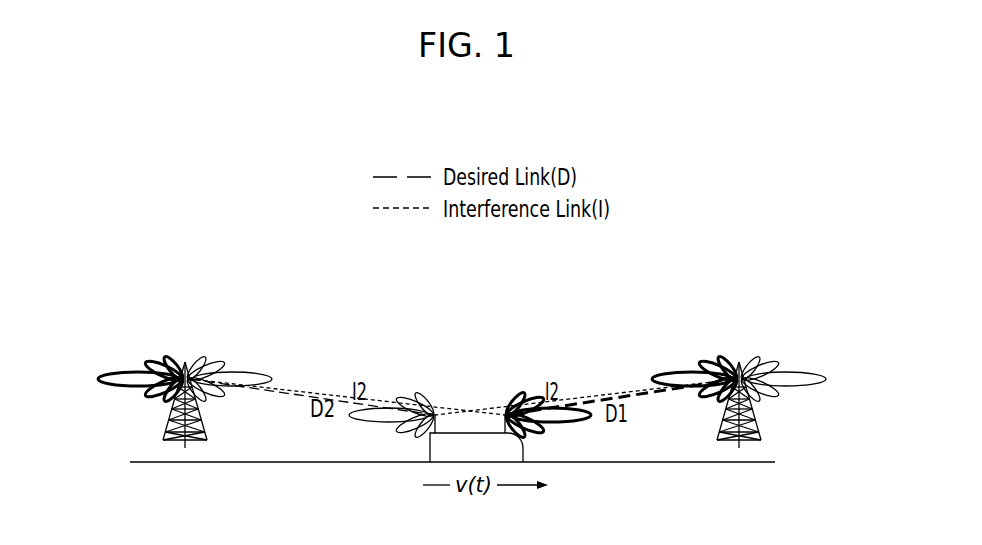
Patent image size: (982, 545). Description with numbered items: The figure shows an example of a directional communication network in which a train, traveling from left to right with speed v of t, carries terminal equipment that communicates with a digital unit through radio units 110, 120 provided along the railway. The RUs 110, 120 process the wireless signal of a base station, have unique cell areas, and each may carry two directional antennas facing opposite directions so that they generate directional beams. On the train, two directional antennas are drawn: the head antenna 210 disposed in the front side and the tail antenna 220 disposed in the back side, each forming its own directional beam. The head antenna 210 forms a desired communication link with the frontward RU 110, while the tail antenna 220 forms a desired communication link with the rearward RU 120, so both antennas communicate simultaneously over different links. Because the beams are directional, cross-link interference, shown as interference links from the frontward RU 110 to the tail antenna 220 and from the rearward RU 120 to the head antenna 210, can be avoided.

The radio unit 110 is at (738, 361).
The radio unit 120 is at (184, 361).
The head antenna 210 is at (530, 434).
The tail antenna 220 is at (420, 433).